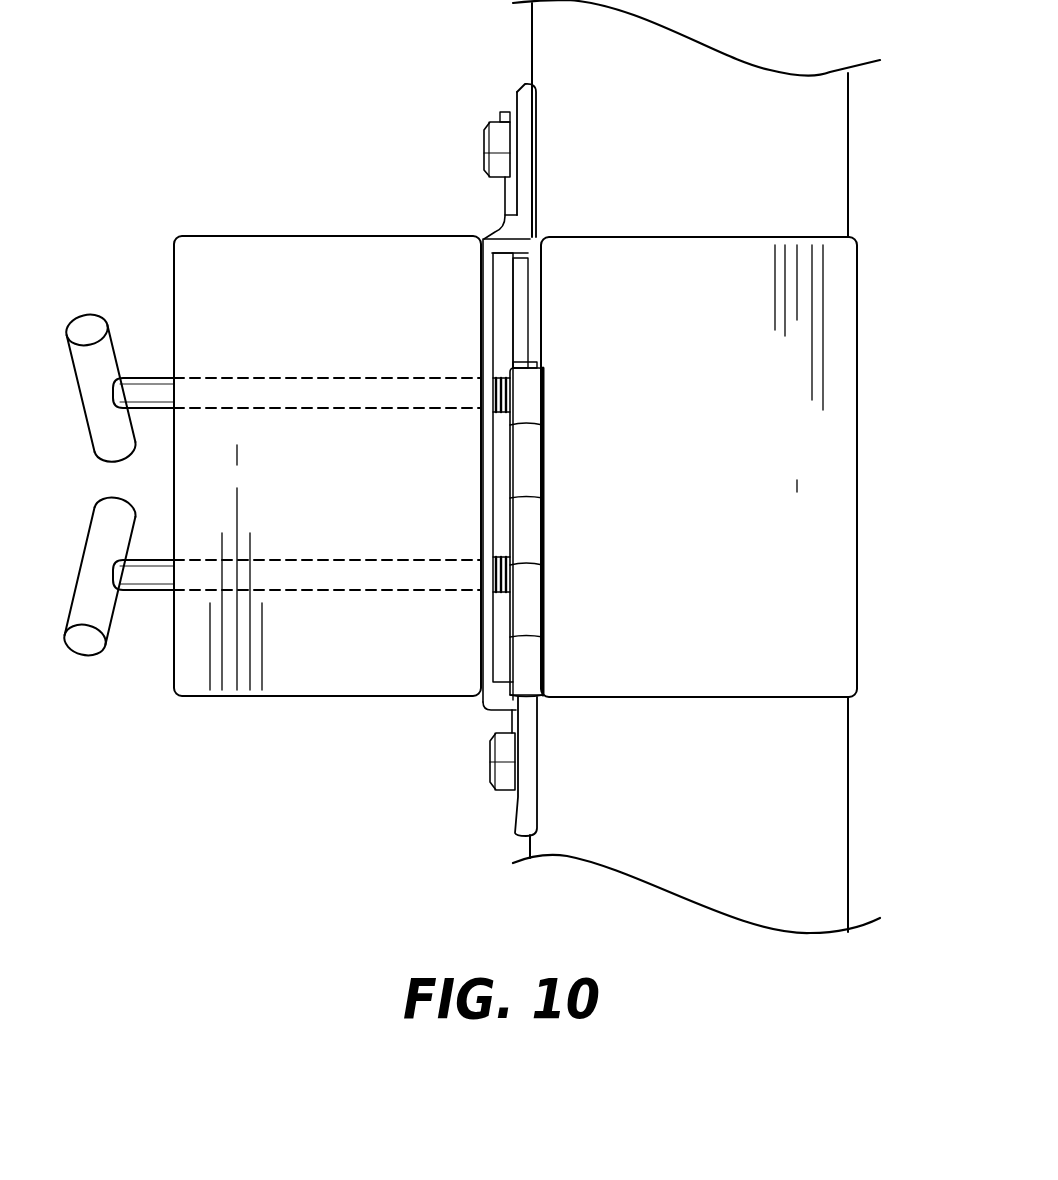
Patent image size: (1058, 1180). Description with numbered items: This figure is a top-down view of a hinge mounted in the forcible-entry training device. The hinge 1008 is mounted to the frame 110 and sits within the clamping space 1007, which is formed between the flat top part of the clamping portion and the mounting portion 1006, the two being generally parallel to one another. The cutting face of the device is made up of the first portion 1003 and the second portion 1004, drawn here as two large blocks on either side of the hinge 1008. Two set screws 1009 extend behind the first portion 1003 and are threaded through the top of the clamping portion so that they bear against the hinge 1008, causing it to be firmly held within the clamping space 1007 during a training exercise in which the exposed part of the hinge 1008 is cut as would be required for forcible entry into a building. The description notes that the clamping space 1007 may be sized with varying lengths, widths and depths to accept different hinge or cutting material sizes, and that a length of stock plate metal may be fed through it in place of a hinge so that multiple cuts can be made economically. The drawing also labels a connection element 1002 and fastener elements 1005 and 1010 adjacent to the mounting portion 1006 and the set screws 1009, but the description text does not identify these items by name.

The frame 110 is at (692, 810).
The wall connection assembly 1002 is at (430, 739).
The first portion 1003 is at (432, 626).
The second portion 1004 is at (682, 618).
The bracket 1005 is at (500, 222).
The mounting portion 1006 is at (500, 95).
The clamping space 1007 is at (502, 287).
The hinge 1008 is at (543, 364).
The set screws 1009 is at (143, 395).
The nut 1010 is at (482, 130).